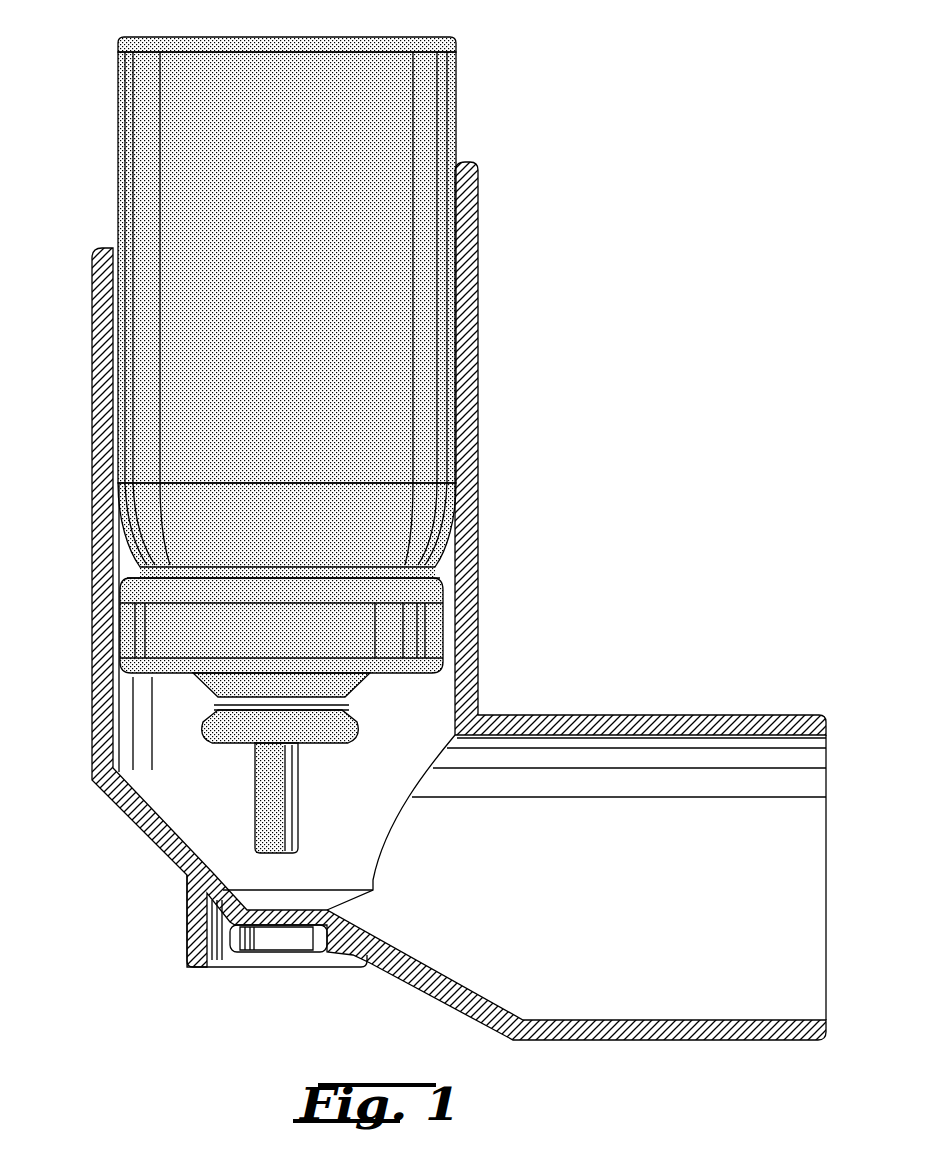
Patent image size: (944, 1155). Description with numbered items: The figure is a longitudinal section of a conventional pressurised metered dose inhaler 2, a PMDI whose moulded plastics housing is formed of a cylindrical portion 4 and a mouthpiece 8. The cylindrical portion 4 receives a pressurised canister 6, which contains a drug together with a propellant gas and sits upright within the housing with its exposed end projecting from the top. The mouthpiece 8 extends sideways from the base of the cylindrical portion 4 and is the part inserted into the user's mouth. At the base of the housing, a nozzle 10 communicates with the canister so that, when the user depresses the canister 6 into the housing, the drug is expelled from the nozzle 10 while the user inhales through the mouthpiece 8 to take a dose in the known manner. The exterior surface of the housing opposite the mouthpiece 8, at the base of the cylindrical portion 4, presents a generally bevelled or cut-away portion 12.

The pressurised metered dose inhaler 2 is at (441, 538).
The cylindrical portion 4 is at (478, 378).
The pressurised canister 6 is at (428, 112).
The mouthpiece 8 is at (733, 716).
The nozzle 10 is at (272, 807).
The bevelled portion 12 is at (184, 896).